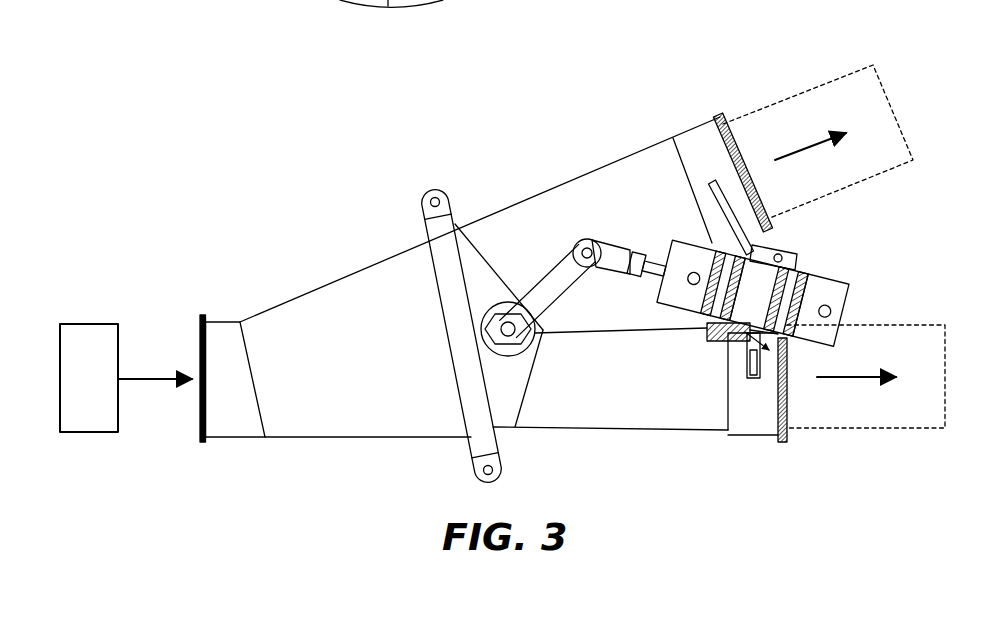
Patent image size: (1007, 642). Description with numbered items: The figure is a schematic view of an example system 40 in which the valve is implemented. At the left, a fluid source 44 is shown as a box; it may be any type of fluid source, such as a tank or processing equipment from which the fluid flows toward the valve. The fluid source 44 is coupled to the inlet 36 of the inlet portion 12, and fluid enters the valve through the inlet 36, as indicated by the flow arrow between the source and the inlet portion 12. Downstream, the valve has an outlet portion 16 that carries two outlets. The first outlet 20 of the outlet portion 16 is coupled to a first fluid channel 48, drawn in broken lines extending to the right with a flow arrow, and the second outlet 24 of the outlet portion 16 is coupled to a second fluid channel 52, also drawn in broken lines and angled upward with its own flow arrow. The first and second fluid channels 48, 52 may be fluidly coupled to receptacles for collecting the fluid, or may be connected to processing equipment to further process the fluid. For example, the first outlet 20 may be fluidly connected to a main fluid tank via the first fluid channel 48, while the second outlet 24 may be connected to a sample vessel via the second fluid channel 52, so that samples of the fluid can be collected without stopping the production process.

The inlet portion 12 is at (335, 275).
The outlet portion 16 is at (552, 418).
The first outlet 20 is at (794, 383).
The second outlet 24 is at (748, 158).
The inlet 36 is at (215, 318).
The system 40 is at (278, 163).
The fluid source 44 is at (88, 322).
The first fluid channel 48 is at (878, 420).
The second fluid channel 52 is at (830, 83).